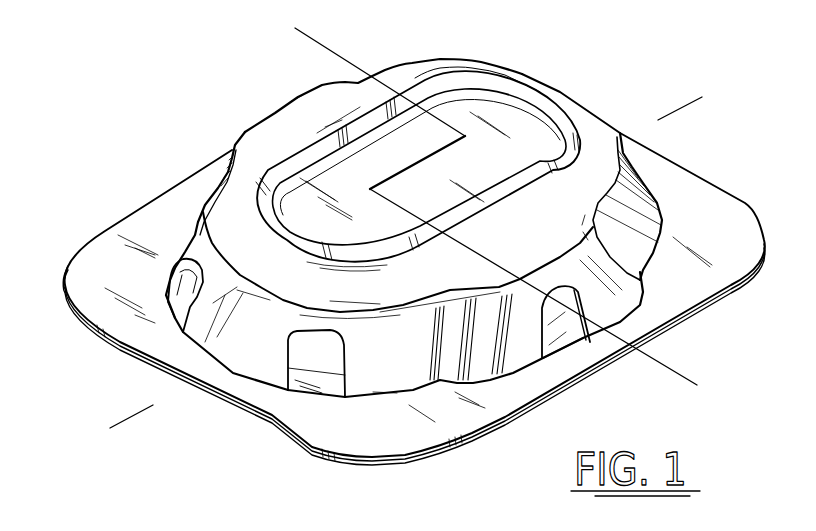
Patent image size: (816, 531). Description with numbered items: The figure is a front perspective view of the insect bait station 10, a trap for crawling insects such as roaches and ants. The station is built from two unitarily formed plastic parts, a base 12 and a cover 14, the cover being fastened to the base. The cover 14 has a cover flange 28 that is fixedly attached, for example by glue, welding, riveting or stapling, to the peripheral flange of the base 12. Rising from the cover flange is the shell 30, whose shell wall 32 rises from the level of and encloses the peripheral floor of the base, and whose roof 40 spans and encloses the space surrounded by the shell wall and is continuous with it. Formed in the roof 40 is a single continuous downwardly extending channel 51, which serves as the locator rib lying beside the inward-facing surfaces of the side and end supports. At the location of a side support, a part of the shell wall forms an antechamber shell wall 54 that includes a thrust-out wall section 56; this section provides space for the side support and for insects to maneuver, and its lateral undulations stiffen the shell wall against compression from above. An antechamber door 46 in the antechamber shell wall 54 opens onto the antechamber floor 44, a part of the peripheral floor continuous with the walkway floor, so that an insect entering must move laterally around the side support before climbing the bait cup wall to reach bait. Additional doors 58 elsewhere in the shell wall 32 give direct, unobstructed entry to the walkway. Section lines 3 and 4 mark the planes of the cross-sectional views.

The insect bait station 10 is at (210, 120).
The base 12 is at (412, 462).
The cover 14 is at (721, 220).
The cover flange 28 is at (133, 227).
The shell 30 is at (415, 77).
The shell wall 32 is at (257, 348).
The roof 40 is at (364, 184).
The antechamber floor 44 is at (553, 347).
The antechamber door 46 is at (580, 342).
The channel 51 is at (519, 77).
The antechamber shell wall 54 is at (573, 275).
The thrust-out wall section 56 is at (300, 100).
The additional doors 58 is at (173, 280).
The section line 3- 3 is at (700, 107).
The section line 4- 4 is at (300, 37).